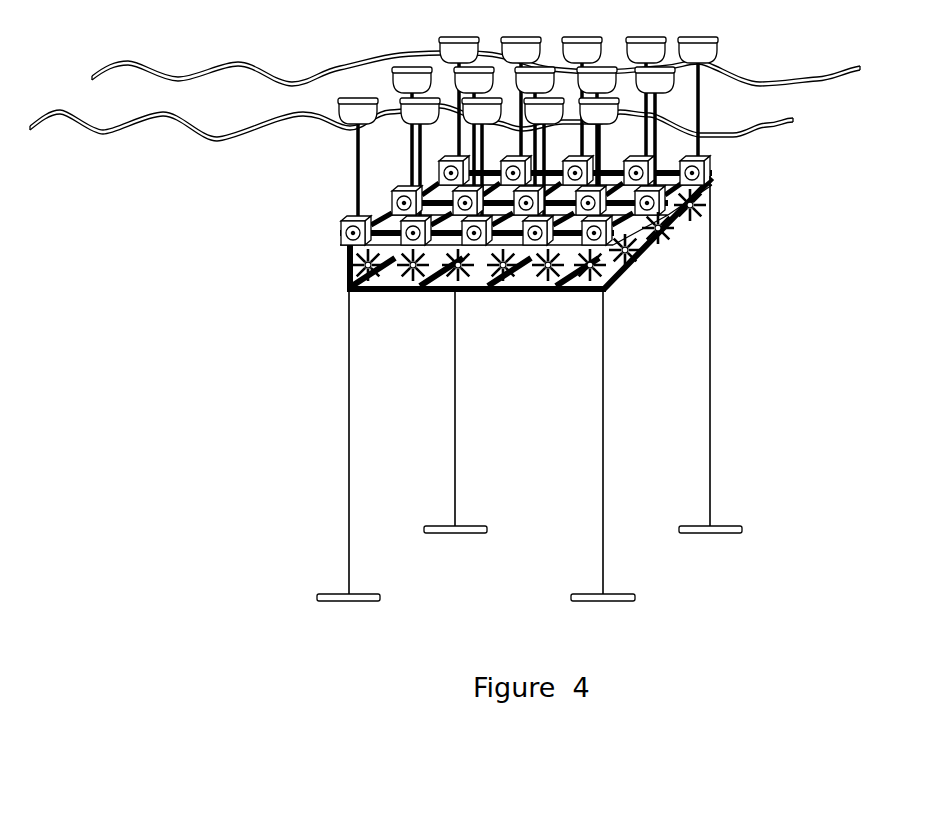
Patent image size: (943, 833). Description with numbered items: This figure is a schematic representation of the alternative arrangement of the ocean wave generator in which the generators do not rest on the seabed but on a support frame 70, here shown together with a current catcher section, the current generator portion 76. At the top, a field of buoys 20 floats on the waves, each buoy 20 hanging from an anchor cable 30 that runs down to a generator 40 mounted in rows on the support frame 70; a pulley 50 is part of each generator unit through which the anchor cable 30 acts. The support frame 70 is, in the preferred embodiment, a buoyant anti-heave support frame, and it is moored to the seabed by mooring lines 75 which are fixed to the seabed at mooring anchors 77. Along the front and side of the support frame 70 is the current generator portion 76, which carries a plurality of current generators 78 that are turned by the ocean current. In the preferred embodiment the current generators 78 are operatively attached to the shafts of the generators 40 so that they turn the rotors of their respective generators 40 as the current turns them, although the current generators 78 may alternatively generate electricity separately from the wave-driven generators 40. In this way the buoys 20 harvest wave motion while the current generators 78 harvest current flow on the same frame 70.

The buoy 20 is at (711, 45).
The anchor cable 30 is at (701, 114).
The generator 40 is at (716, 165).
The pulley 50 is at (348, 233).
The support frame 70 is at (687, 233).
The mooring line 75 is at (710, 351).
The current generator portion 76 is at (712, 180).
The mooring anchor 77 is at (728, 523).
The current generator 78 is at (362, 263).